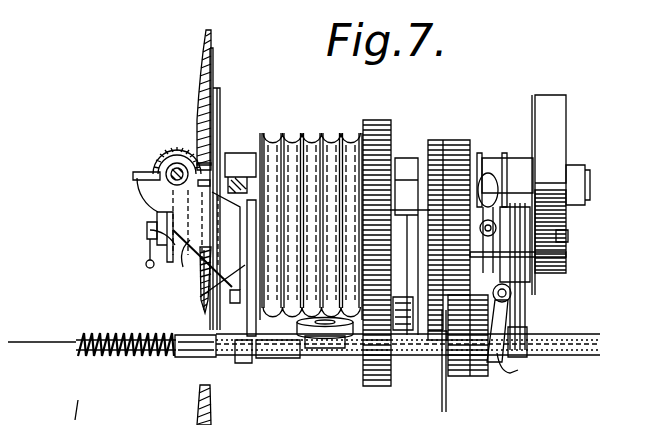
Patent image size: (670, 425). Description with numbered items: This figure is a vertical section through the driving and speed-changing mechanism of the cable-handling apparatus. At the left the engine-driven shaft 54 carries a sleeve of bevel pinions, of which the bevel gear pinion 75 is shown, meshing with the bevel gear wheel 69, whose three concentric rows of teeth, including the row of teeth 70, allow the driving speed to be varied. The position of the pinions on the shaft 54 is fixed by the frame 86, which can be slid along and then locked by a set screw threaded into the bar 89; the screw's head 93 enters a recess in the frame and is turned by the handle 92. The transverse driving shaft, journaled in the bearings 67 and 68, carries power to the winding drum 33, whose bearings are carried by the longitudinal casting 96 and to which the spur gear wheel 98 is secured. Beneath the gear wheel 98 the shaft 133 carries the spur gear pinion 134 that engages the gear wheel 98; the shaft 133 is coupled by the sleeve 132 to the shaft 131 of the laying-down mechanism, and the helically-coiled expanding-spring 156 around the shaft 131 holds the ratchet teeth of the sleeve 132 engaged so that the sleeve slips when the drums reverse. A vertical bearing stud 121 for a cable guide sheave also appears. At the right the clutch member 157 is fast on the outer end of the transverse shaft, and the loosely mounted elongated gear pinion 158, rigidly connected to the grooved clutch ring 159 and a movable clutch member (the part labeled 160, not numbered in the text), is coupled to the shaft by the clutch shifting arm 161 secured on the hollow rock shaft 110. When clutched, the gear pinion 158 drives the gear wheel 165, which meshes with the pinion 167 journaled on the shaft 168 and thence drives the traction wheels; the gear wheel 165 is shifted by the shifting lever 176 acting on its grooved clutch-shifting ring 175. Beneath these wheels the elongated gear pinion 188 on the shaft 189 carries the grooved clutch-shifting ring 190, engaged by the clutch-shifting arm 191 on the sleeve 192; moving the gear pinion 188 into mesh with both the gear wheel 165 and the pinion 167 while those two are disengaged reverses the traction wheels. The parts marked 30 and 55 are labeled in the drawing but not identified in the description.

The shaft 30 is at (242, 333).
The winding drum 33 is at (286, 133).
The shaft 54 is at (172, 170).
The bracket 55 is at (165, 183).
The bearing 67 is at (247, 153).
The bearing 68 is at (405, 160).
The bevel gear wheel 69 is at (212, 50).
The row of teeth 70 is at (200, 399).
The bevel gear pinion 75 is at (182, 154).
The frame 86 is at (134, 178).
The bar 89 is at (181, 268).
The handle 92 is at (146, 268).
The head 93 is at (147, 229).
The longitudinal casting 96 is at (201, 292).
The spur gear wheel 98 is at (383, 114).
The hollow rock shaft 110 is at (568, 236).
The vertical bearing stud 121 is at (327, 350).
The shaft 131 is at (72, 343).
The sleeve 132 is at (208, 357).
The shaft 133 is at (282, 358).
The spur gear pinion 134 is at (380, 372).
The helically-coiled expanding-spring 156 is at (110, 338).
The clutch member 157 is at (562, 112).
The gear pinion 158 is at (449, 140).
The grooved clutch ring 159 is at (490, 157).
The box 160 is at (518, 172).
The clutch shifting arm 161 is at (564, 210).
The gear wheel 165 is at (500, 203).
The pinion 167 is at (447, 385).
The shaft 168 is at (548, 272).
The grooved clutch-shifting ring 175 is at (527, 337).
The shifting lever 176 is at (567, 256).
The gear pinion 188 is at (473, 378).
The shaft 189 is at (433, 341).
The grooved clutch-shifting ring 190 is at (500, 358).
The clutch-shifting arm 191 is at (520, 318).
The sleeve 192 is at (512, 295).